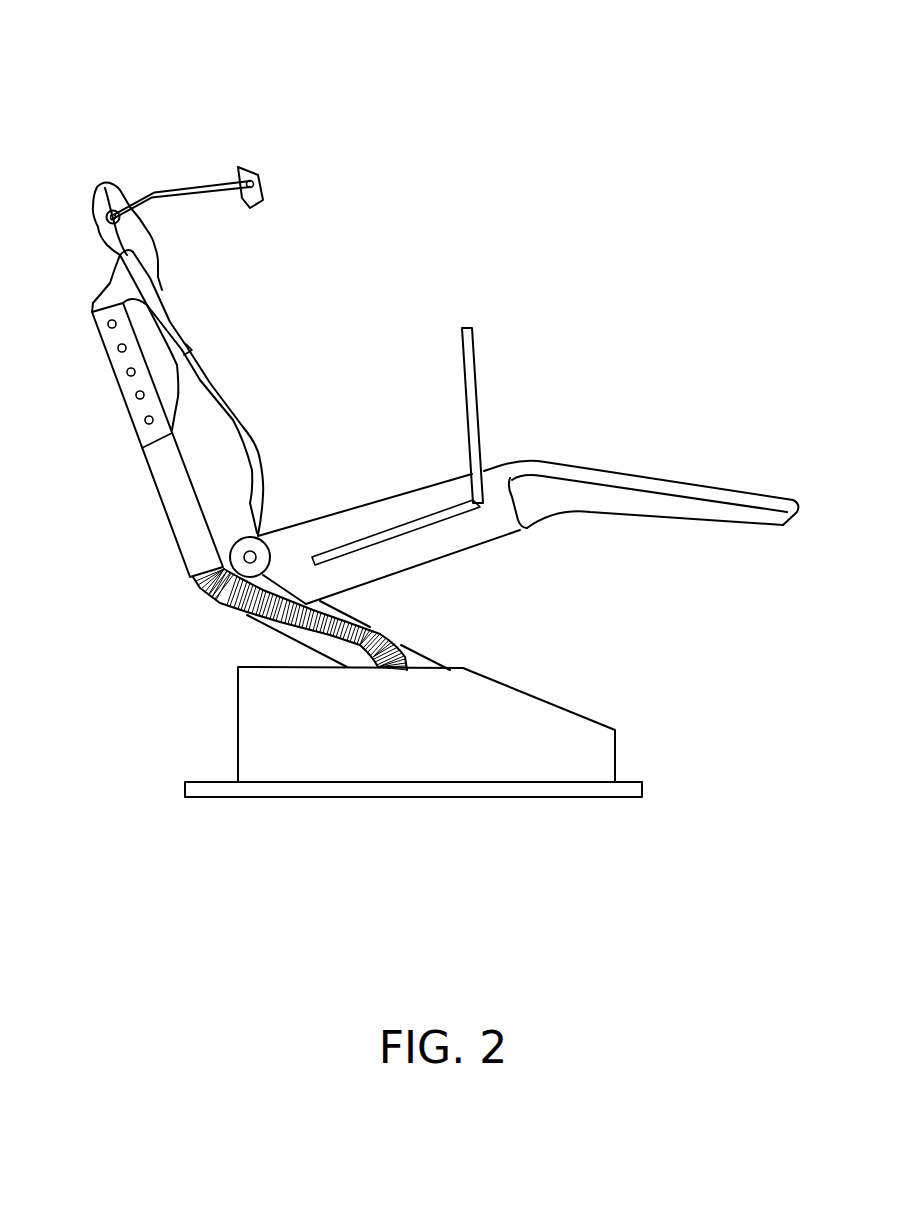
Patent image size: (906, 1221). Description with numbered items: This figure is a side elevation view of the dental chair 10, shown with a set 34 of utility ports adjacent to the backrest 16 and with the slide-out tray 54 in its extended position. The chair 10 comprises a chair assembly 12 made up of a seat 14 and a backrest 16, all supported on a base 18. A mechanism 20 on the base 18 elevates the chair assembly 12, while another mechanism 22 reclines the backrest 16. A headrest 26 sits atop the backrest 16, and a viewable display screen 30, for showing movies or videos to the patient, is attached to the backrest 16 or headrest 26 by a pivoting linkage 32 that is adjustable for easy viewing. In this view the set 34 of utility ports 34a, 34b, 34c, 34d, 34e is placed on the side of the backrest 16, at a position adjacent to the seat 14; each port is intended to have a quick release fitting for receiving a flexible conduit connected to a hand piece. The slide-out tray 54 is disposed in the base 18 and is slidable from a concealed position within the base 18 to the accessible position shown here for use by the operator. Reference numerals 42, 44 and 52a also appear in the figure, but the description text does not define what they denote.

The dental chair 10 is at (400, 206).
The chair assembly 12 is at (567, 503).
The seat 14 is at (358, 510).
The backrest 16 is at (197, 420).
The base 18 is at (255, 737).
The mechanism 20 is at (422, 640).
The mechanism 22 is at (213, 592).
The headrest 26 is at (158, 237).
The viewable display screen 30 is at (245, 165).
The pivoting linkage 32 is at (157, 188).
The set of utility ports 34 is at (188, 349).
The utility port 34a is at (106, 323).
The utility port 34b is at (115, 353).
The utility port 34c is at (130, 378).
The utility port 34d is at (137, 403).
The utility port 34e is at (145, 425).
The lumbar cushion 42 is at (172, 322).
The backrest bracket 44 is at (152, 473).
The seat frame front portion 52a is at (500, 522).
The slide-out tray 54 is at (477, 400).